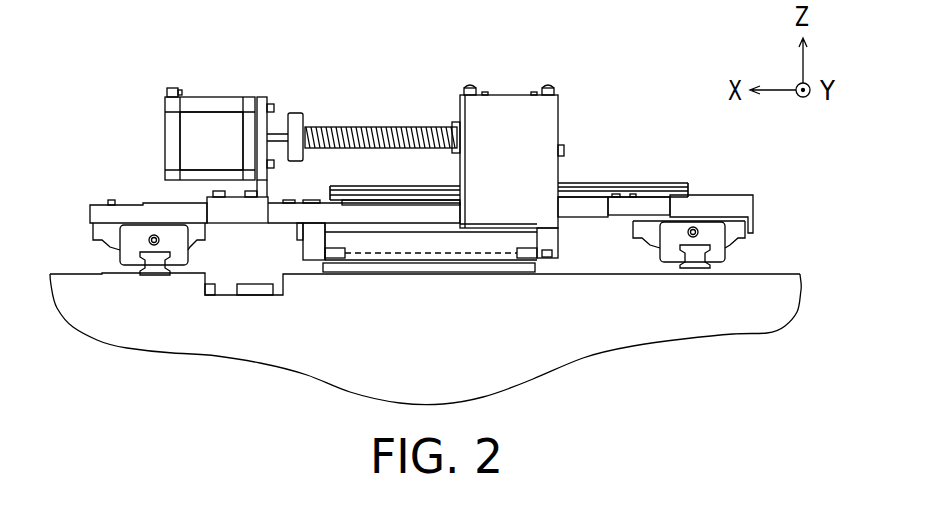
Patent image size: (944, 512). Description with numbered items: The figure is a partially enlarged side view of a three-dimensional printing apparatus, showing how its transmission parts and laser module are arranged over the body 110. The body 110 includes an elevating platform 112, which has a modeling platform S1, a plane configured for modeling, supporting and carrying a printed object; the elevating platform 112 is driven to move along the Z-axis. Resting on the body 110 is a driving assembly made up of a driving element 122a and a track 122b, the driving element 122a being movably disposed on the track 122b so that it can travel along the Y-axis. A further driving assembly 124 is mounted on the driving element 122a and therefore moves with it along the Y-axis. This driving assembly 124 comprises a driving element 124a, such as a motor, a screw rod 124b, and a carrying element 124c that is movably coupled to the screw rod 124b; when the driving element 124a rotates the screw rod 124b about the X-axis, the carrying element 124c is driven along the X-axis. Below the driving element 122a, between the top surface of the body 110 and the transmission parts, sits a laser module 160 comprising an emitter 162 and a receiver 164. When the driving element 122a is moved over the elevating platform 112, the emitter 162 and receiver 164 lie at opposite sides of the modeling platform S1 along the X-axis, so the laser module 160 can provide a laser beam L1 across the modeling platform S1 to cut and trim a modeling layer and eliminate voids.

The body 110 is at (752, 323).
The elevating platform 112 is at (322, 271).
The driving element 122a is at (126, 208).
The track 122b is at (148, 262).
The driving assembly 124 is at (525, 50).
The driving element 124a is at (215, 123).
The screw rod 124b is at (355, 126).
The carrying element 124c is at (503, 122).
The laser module 160 is at (550, 325).
The emitter 162 is at (527, 262).
The receiver 164 is at (333, 262).
The modeling platform S1 is at (385, 250).
The laser beam L1 is at (433, 262).